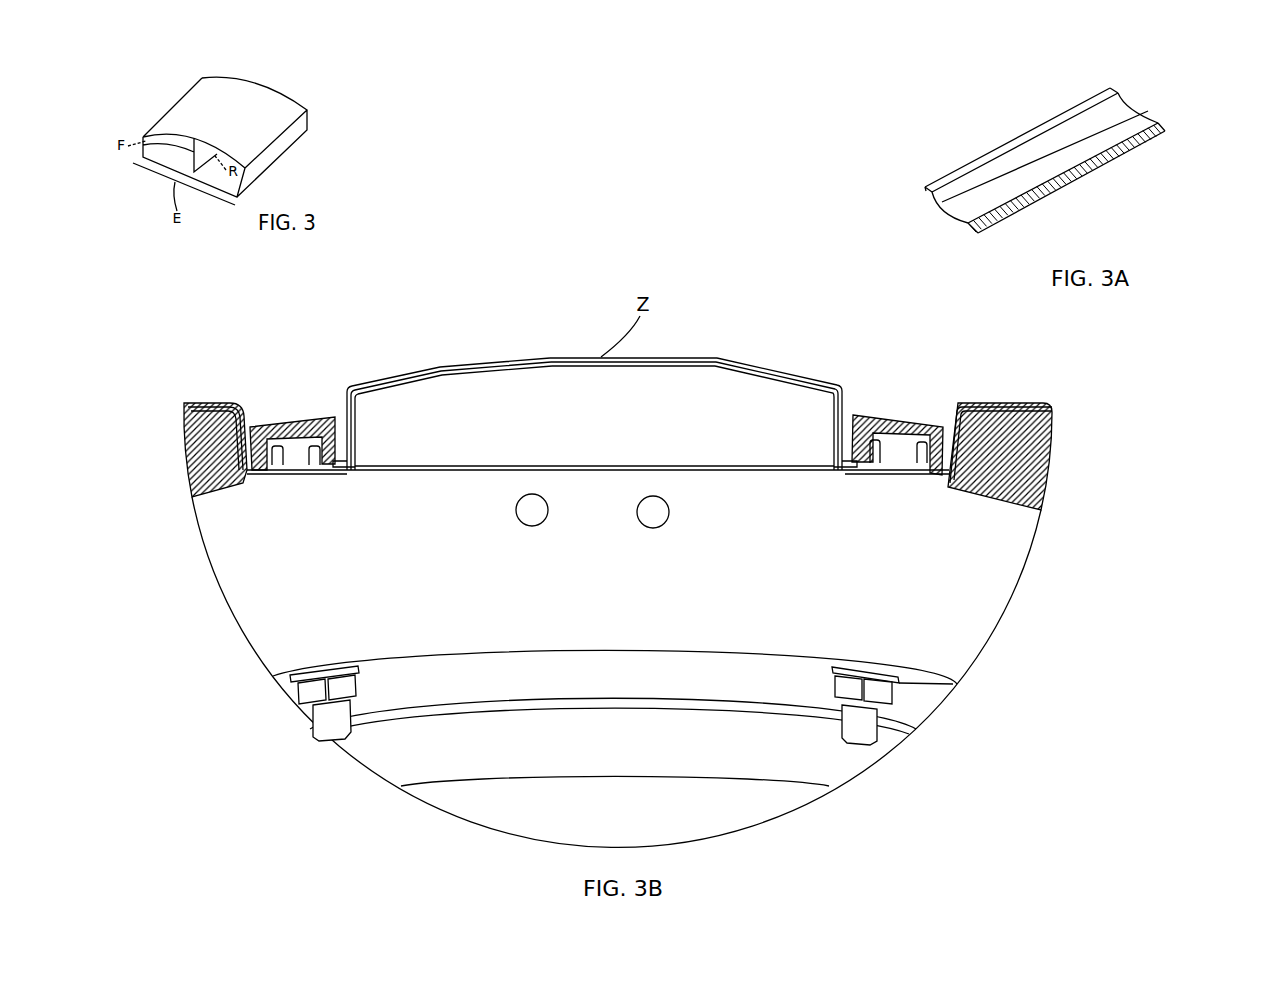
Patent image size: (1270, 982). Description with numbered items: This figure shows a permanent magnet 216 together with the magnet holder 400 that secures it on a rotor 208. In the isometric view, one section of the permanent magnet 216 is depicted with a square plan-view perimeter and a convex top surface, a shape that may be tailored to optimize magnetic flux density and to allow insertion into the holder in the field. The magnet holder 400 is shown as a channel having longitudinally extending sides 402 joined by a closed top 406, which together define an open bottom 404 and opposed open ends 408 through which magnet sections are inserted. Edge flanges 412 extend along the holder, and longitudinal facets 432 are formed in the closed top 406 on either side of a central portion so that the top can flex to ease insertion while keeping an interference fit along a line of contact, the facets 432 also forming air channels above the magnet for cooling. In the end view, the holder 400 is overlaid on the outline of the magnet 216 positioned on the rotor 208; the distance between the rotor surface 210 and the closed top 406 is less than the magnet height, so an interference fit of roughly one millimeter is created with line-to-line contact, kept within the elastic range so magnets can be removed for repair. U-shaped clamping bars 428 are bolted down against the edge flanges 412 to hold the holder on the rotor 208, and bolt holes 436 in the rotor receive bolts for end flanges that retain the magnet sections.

In FIG. 3, the permanent magnet 216 is at (259, 70).
In FIG. 3B, the rotor 208 is at (268, 588).
In FIG. 3B, the rotor surface 210 is at (440, 466).
In FIG. 3A, the magnet holder 400 is at (1044, 155).
In FIG. 3B, the magnet holder 400 is at (595, 376).
In FIG. 3A, the longitudinally extending sides 402 is at (1108, 158).
In FIG. 3A, the open bottom 404 is at (942, 200).
In FIG. 3B, the open bottom 404 is at (712, 460).
In FIG. 3A, the closed top 406 is at (1128, 103).
In FIG. 3B, the closed top 406 is at (592, 357).
In FIG. 3A, the opposed open ends 408 is at (945, 228).
In FIG. 3B, the opposed open ends 408 is at (679, 414).
In FIG. 3A, the edge flanges 412 is at (1047, 200).
In FIG. 3B, the edge flanges 412 is at (265, 476).
In FIG. 3B, the U-shaped clamping bars 428 is at (286, 424).
In FIG. 3A, the longitudinal facets 432 is at (1090, 100).
In FIG. 3B, the longitudinal facets 432 is at (410, 368).
In FIG. 3B, the bolt holes 436 is at (641, 527).